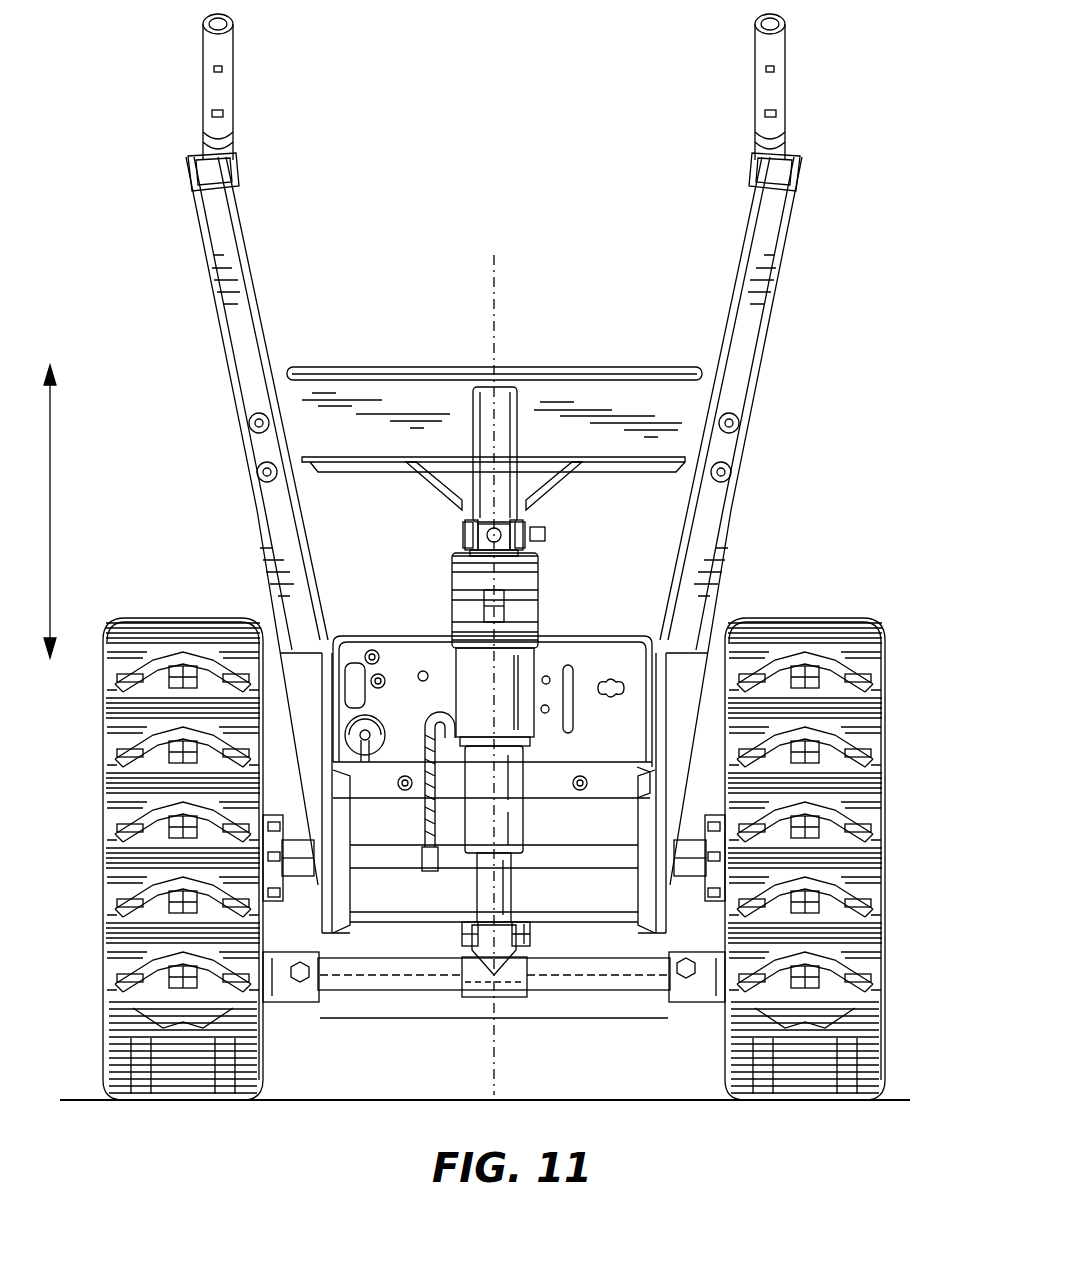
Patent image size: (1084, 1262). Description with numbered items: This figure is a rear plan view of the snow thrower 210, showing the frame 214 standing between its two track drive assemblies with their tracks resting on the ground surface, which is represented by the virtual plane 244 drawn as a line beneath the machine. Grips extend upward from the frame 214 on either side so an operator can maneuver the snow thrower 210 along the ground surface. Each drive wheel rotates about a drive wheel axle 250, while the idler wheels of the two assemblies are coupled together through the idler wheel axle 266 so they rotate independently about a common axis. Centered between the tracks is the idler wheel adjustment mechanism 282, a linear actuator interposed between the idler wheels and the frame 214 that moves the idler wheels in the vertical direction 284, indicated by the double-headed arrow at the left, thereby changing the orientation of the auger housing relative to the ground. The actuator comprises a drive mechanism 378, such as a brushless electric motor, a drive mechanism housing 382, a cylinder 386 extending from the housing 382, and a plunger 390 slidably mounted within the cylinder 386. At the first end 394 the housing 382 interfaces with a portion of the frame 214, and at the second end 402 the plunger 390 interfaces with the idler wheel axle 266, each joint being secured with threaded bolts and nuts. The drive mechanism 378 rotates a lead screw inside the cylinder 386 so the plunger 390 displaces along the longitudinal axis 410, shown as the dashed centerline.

The snow thrower 210 is at (870, 274).
The frame 214 is at (620, 656).
The virtual plane 244 is at (893, 1098).
The drive wheel axle 250 is at (548, 855).
The idler wheel axle 266 is at (626, 975).
The idler wheel adjustment mechanism 282 is at (432, 618).
The vertical direction 284 is at (52, 512).
The drive mechanism 378 is at (522, 676).
The drive mechanism housing 382 is at (525, 576).
The cylinder 386 is at (515, 782).
The plunger 390 is at (510, 893).
The first end 394 is at (432, 553).
The second end 402 is at (480, 982).
The longitudinal axis 410 is at (498, 306).